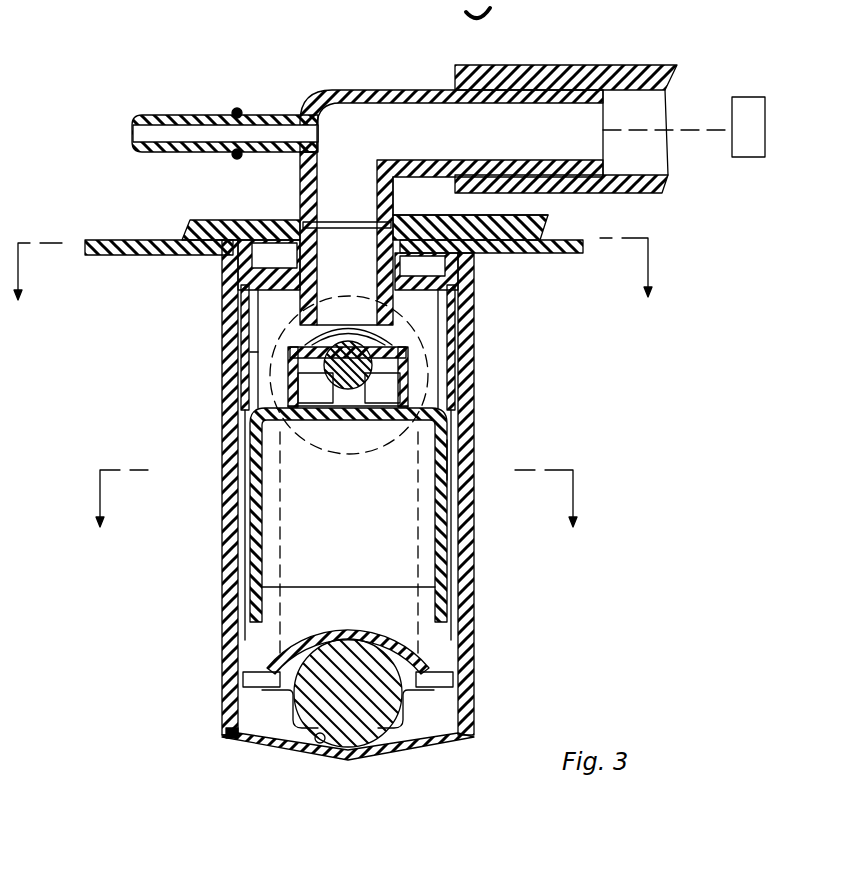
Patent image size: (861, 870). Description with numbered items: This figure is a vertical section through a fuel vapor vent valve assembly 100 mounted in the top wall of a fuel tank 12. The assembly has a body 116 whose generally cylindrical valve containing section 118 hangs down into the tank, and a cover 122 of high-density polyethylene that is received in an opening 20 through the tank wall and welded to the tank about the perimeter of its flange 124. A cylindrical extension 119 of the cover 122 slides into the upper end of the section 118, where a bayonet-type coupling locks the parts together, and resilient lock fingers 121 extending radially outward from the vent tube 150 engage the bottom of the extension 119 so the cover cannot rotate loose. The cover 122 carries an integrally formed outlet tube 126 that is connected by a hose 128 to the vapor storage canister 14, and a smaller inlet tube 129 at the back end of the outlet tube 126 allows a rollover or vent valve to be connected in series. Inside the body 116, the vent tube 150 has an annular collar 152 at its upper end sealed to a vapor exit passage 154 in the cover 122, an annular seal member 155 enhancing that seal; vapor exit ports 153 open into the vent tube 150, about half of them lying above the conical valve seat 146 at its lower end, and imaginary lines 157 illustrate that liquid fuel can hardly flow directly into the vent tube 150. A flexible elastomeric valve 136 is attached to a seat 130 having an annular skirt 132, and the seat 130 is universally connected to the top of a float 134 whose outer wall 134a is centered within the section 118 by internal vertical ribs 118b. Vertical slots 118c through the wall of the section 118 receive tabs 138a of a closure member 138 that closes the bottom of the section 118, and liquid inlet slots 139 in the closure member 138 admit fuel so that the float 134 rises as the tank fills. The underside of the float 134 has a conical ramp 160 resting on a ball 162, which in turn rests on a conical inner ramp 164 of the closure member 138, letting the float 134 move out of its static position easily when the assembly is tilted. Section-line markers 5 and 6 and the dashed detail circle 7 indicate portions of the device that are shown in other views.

The fuel vapor vent valve assembly 100 is at (741, 53).
The outlet tube 126 is at (367, 90).
The hose 128 is at (655, 78).
The vapor storage canister 14 is at (752, 108).
The inlet tube 129 is at (183, 116).
The annular seal member 155 is at (282, 215).
The flange 124 is at (196, 220).
The opening 20 is at (218, 255).
The cylindrical extension 119 is at (478, 265).
The fuel tank 12 is at (582, 242).
The cover 122 is at (518, 213).
The valve containing section 118 is at (478, 430).
The resilient lock fingers 121 is at (266, 272).
The valve body 116 is at (485, 388).
The vertical ribs 118b is at (237, 299).
The vapor exit ports 153 is at (238, 325).
The imaginary lines 157 is at (236, 352).
The vent tube 150 is at (312, 248).
The vapor exit passage 154 is at (378, 163).
The annular collar 152 is at (398, 176).
The conical valve seat 146 is at (318, 338).
The annular skirt 132 is at (288, 398).
The seat 130 is at (292, 383).
The valve 136 is at (335, 345).
The float 134 is at (257, 462).
The outer wall 134a is at (442, 468).
The detail circle 7 is at (340, 458).
The ramp 160 is at (377, 643).
The ball 162 is at (333, 640).
The vertical slots 118c is at (275, 676).
The tabs 138a is at (263, 692).
The liquid inlet slots 139 is at (290, 745).
The closure member 138 is at (233, 738).
The ramp 164 is at (320, 743).
The section line 5- 5 is at (345, 274).
The section line 6- 6 is at (331, 498).